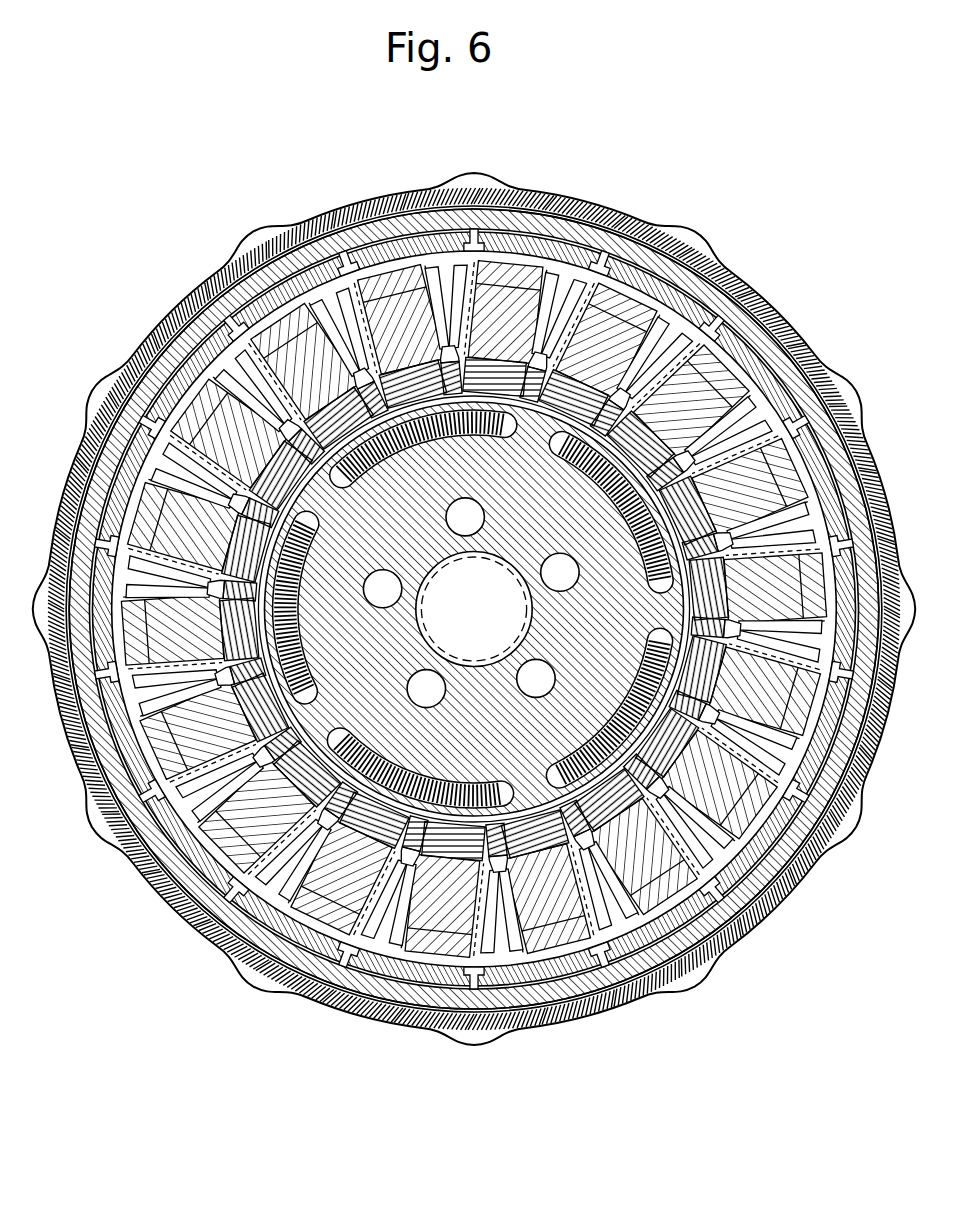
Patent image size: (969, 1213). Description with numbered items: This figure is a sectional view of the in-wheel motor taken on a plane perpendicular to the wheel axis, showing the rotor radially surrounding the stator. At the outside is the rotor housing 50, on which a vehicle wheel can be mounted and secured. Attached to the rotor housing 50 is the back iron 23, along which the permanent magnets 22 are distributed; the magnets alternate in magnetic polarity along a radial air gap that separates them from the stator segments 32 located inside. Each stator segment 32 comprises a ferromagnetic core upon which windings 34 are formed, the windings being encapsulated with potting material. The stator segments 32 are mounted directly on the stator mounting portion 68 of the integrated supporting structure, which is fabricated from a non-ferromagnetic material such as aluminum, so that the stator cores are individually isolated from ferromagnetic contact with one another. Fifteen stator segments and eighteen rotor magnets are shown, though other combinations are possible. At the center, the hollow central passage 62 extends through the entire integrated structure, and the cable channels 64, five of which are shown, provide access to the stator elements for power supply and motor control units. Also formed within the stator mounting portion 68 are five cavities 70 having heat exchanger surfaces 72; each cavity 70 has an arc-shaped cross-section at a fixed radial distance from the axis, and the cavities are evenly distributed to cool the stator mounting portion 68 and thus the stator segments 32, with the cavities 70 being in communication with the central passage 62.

The permanent magnets 22 is at (474, 590).
The back iron 23 is at (474, 609).
The stator segments 32 is at (473, 580).
The windings 34 is at (474, 577).
The rotor housing 50 is at (474, 609).
The central passage 62 is at (474, 609).
The cable channels 64 is at (471, 603).
The stator mounting portion 68 is at (473, 609).
The cavities 70 is at (99, 385).
The heat exchanger surfaces 72 is at (483, 720).